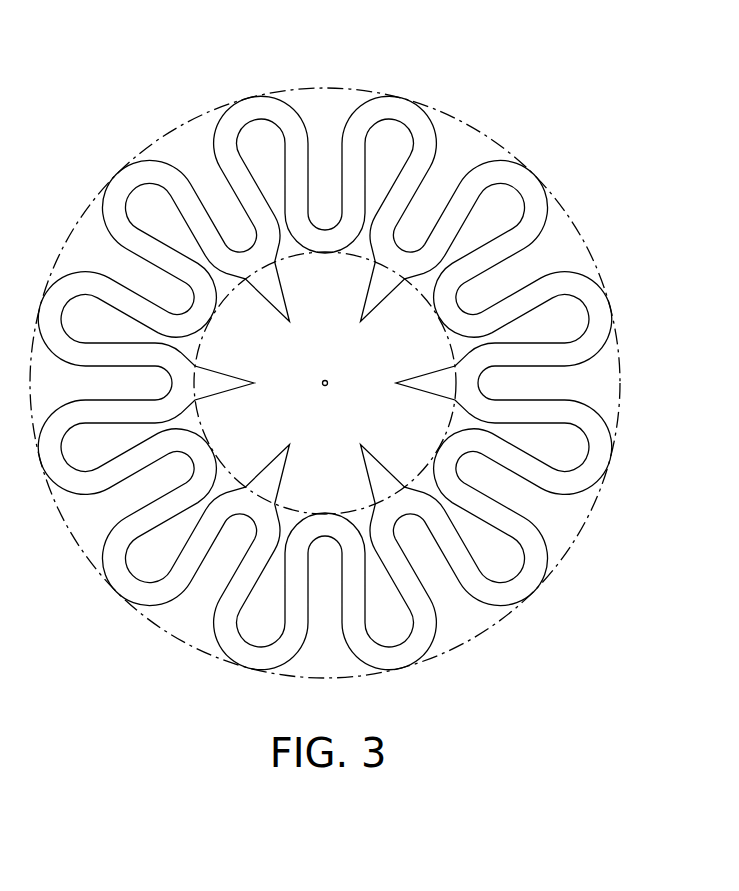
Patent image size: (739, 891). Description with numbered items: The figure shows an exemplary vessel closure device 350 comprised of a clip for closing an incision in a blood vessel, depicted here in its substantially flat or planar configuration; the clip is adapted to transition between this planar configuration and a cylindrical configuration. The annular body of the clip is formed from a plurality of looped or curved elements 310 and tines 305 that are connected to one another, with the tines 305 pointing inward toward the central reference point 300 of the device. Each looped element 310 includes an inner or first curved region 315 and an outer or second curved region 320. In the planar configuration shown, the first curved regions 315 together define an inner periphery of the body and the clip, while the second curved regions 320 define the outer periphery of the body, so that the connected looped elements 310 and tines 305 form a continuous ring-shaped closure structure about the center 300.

The central axis point 300 is at (329, 381).
The tines 305 is at (252, 280).
The looped element 310 is at (396, 80).
The first curved region 315 is at (317, 238).
The second curved region 320 is at (422, 140).
The vessel closure device 350 is at (550, 79).